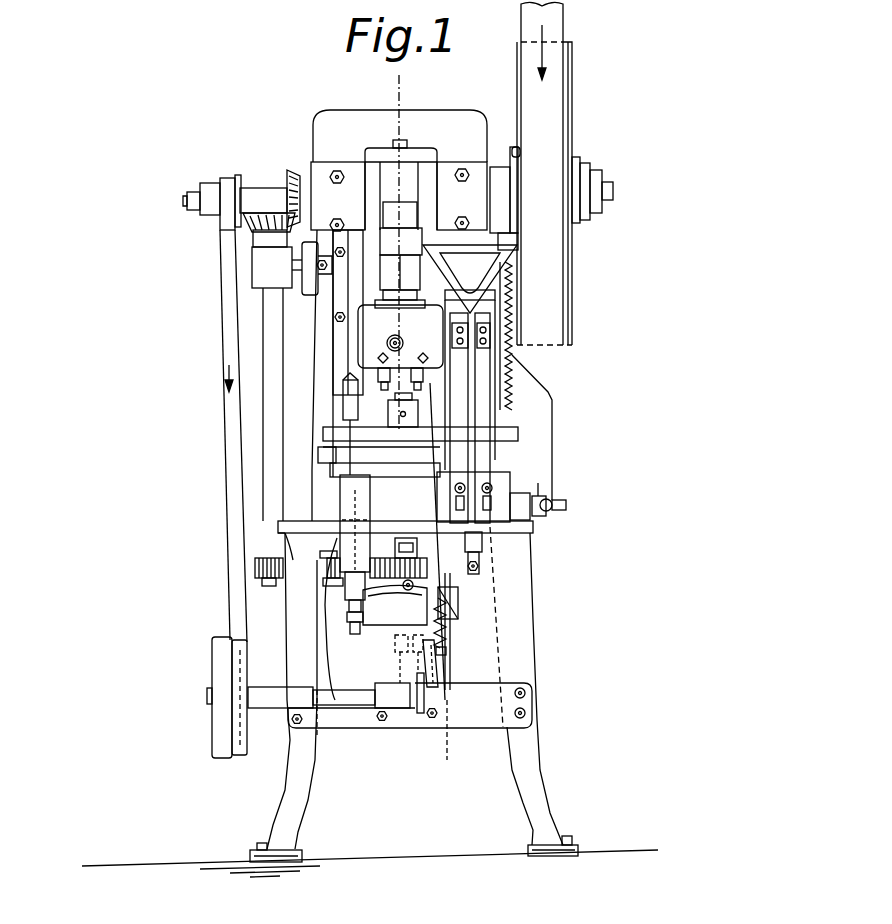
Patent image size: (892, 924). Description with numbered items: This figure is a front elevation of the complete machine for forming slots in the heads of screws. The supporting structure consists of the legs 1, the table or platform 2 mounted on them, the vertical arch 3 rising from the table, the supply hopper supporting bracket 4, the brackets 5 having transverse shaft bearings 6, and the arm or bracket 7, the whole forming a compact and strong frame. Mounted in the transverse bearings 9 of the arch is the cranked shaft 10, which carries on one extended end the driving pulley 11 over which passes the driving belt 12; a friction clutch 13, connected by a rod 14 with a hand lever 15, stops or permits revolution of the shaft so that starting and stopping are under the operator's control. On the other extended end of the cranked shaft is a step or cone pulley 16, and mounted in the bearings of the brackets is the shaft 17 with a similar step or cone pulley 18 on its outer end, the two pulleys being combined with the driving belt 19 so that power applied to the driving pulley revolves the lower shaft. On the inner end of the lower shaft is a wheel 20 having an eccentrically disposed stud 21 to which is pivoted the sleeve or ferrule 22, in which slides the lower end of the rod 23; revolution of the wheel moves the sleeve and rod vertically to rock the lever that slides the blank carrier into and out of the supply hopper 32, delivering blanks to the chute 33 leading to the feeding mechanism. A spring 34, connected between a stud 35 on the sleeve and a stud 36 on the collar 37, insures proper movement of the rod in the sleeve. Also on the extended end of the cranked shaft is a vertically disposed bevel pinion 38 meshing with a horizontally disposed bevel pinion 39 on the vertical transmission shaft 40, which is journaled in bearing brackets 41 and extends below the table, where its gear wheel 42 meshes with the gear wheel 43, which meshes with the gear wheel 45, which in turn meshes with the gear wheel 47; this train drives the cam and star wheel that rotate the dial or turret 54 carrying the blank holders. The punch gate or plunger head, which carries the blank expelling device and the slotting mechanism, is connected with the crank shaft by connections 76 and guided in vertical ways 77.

The legs 1 is at (500, 823).
The table or platform 2 is at (518, 522).
The vertical arch 3 is at (422, 97).
The supply hopper supporting bracket 4 is at (392, 312).
The brackets 5 is at (262, 526).
The transverse shaft bearings 6 is at (305, 399).
The arm or bracket 7 is at (336, 665).
The transverse bearings 9 is at (399, 196).
The cranked shaft 10 is at (423, 180).
The driving pulley 11 is at (574, 84).
The driving belt 12 is at (566, 26).
The friction clutch 13 is at (513, 170).
The rod 14 is at (528, 370).
The hand lever 15 is at (548, 503).
The step or cone pulley 16 is at (222, 215).
The shaft 17 is at (330, 690).
The step or cone pulley 18 is at (247, 738).
The driving belt 19 is at (228, 455).
The wheel 20 is at (428, 706).
The eccentrically disposed stud 21 is at (450, 677).
The sleeve or ferrule 22 is at (437, 665).
The rod 23 is at (440, 580).
The supply hopper 32 is at (470, 279).
The chute 33 is at (485, 422).
The spring 34 is at (448, 634).
The stud 35 is at (448, 650).
The stud 36 is at (450, 616).
The collar 37 is at (455, 604).
The bevel pinion 38 is at (291, 172).
The bevel pinion 39 is at (266, 212).
The vertical transmission shaft 40 is at (280, 363).
The bearing brackets 41 is at (250, 283).
The gear wheel 42 is at (254, 568).
The gear wheel 43 is at (324, 574).
The gear wheel 45 is at (345, 587).
The gear wheel 47 is at (358, 598).
The dial or turret 54 is at (365, 431).
The connections 76 is at (420, 262).
The vertical ways 77 is at (342, 280).